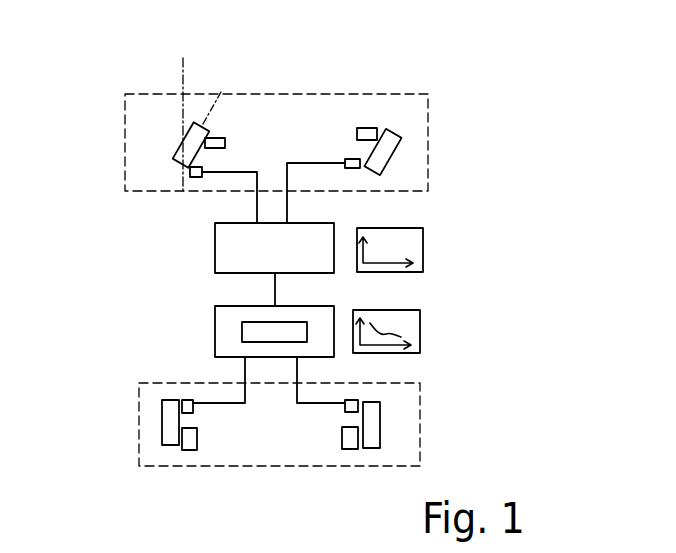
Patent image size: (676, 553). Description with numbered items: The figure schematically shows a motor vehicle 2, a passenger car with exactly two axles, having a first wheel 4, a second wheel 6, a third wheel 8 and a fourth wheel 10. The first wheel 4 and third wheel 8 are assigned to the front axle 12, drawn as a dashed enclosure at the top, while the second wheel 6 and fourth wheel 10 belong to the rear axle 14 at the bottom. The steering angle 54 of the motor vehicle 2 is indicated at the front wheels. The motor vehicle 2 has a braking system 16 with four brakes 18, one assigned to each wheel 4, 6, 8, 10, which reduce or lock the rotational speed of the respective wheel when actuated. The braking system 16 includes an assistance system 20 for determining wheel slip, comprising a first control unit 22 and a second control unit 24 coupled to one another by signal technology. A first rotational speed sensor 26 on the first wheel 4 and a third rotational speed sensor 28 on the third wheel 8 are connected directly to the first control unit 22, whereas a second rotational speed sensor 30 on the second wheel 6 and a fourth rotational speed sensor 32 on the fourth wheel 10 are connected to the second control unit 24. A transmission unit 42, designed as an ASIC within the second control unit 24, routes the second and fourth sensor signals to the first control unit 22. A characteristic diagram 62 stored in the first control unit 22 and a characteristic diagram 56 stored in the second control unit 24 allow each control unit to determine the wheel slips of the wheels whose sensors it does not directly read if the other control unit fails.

The motor vehicle 2 is at (480, 55).
The first wheel 4 is at (185, 145).
The second wheel 6 is at (172, 425).
The third wheel 8 is at (381, 163).
The fourth wheel 10 is at (370, 440).
The front axle 12 is at (125, 103).
The rear axle 14 is at (420, 417).
The braking system 16 is at (267, 84).
The brakes 18 is at (217, 143).
The assistance system 20 is at (146, 240).
The first control unit 22 is at (215, 269).
The second control unit 24 is at (215, 338).
The first rotational speed sensor 26 is at (192, 172).
The third rotational speed sensor 28 is at (357, 168).
The second rotational speed sensor 30 is at (190, 403).
The fourth rotational speed sensor 32 is at (358, 400).
The transmission unit 42 is at (295, 334).
The steering angle 54 is at (220, 92).
The characteristic diagram 56 is at (420, 336).
The characteristic diagram 62 is at (423, 258).